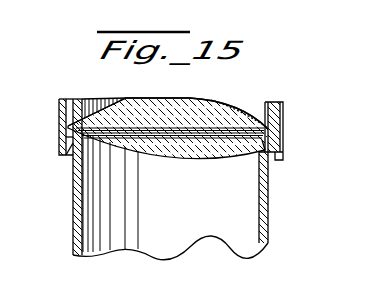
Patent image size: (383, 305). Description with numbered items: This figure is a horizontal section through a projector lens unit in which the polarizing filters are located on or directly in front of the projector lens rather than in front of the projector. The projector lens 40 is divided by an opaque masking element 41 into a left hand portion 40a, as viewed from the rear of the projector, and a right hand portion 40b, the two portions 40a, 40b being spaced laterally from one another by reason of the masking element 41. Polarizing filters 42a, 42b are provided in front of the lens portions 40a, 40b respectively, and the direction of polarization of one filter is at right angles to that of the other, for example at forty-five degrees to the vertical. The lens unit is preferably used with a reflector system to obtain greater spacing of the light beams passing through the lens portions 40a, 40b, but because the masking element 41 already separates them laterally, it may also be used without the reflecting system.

The projector lens 40 is at (178, 160).
The left hand portion 40a is at (78, 127).
The right hand portion 40b is at (238, 120).
The opaque masking element 41 is at (157, 98).
The polarizing filter 42a is at (110, 108).
The polarizing filter 42b is at (250, 124).